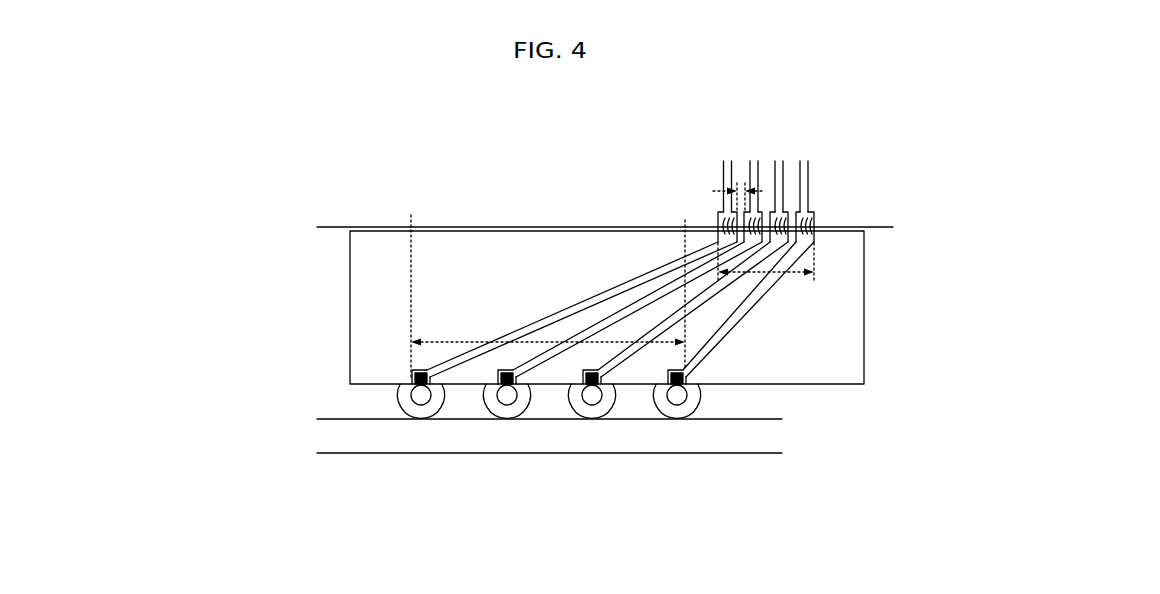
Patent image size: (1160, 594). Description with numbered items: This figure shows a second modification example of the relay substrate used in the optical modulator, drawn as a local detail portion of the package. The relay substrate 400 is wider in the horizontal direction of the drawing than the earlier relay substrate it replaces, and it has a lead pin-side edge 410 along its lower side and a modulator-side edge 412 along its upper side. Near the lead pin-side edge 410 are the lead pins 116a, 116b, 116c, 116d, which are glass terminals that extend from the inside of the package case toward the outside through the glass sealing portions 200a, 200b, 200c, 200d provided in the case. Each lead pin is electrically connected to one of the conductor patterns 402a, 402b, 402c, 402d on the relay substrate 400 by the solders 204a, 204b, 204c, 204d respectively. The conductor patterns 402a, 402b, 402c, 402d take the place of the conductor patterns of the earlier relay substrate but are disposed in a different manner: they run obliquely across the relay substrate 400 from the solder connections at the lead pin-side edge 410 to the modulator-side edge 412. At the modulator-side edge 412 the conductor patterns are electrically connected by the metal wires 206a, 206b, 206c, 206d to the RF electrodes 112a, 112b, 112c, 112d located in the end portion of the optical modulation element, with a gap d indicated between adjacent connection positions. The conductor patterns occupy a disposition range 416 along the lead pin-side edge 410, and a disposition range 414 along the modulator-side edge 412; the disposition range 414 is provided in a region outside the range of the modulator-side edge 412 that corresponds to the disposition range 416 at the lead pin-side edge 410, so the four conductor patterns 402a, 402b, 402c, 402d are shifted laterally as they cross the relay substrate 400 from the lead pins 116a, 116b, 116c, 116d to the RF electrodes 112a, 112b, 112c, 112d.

The relay substrate 400 is at (348, 278).
The lead pin-side edge 410 is at (817, 385).
The modulator-side edge 412 is at (457, 229).
The disposition range 414 is at (782, 280).
The disposition range 416 is at (647, 347).
The gap between adjacent bonding pads d is at (738, 188).
The RF electrode 112a is at (803, 175).
The RF electrode 112b is at (781, 170).
The RF electrode 112c is at (750, 162).
The RF electrode 112d is at (728, 177).
The metal wire 206a is at (813, 223).
The metal wire 206b is at (787, 217).
The metal wire 206c is at (748, 217).
The metal wire 206d is at (718, 223).
The conductor pattern 402a is at (788, 257).
The conductor pattern 402b is at (703, 293).
The conductor pattern 402c is at (593, 325).
The conductor pattern 402d is at (623, 280).
The solder 204a is at (687, 373).
The solder 204b is at (593, 385).
The solder 204c is at (507, 385).
The solder 204d is at (417, 371).
The glass sealing portion 200a is at (697, 408).
The glass sealing portion 200b is at (615, 410).
The glass sealing portion 200c is at (491, 413).
The glass sealing portion 200d is at (423, 412).
The lead pin 116a is at (690, 402).
The lead pin 116b is at (596, 402).
The lead pin 116c is at (507, 401).
The lead pin 116d is at (418, 398).